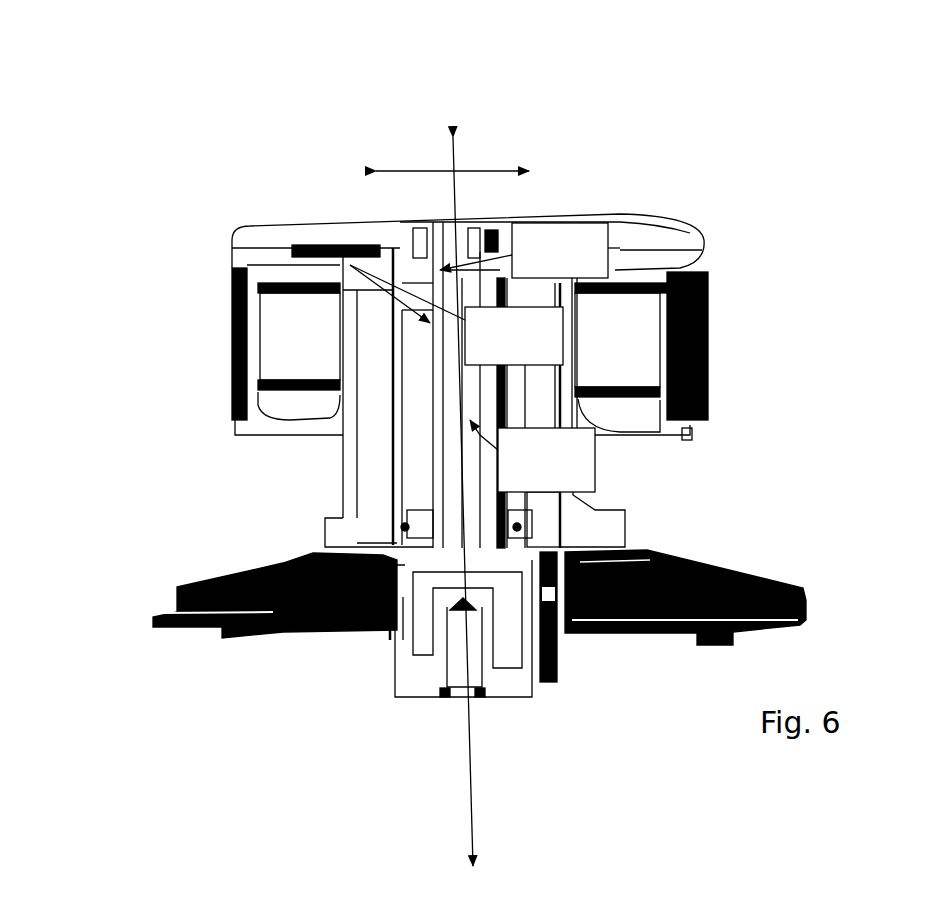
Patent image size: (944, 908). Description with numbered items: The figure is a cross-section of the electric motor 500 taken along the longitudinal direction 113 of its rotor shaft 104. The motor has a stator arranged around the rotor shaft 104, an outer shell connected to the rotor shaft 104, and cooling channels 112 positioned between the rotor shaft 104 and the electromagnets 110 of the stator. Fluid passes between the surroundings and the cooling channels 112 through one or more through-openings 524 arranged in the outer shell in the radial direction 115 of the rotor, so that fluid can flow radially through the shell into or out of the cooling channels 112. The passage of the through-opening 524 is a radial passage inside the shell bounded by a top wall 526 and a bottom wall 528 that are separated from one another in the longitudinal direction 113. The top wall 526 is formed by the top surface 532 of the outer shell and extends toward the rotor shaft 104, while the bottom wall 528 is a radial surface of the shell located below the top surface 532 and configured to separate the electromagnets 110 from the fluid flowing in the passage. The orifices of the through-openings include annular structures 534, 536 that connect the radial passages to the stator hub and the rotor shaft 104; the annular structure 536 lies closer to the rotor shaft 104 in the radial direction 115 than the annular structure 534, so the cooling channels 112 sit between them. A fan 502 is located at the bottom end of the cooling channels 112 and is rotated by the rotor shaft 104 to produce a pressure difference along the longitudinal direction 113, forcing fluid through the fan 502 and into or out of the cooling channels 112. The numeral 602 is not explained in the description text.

The electric motor 500 is at (336, 289).
The fan 502 is at (463, 572).
The rotor shaft 104 is at (532, 456).
The electromagnets 110 is at (672, 268).
The cooling channels 112 is at (329, 397).
The longitudinal direction 113 is at (414, 492).
The radial direction 115 is at (467, 145).
The through-opening 524 is at (395, 242).
The top wall 526 is at (311, 347).
The bottom wall 528 is at (232, 351).
The top surface 532 is at (322, 184).
The annular structure 534 is at (456, 315).
The annular structure 536 is at (524, 250).
The hub 602 is at (433, 652).